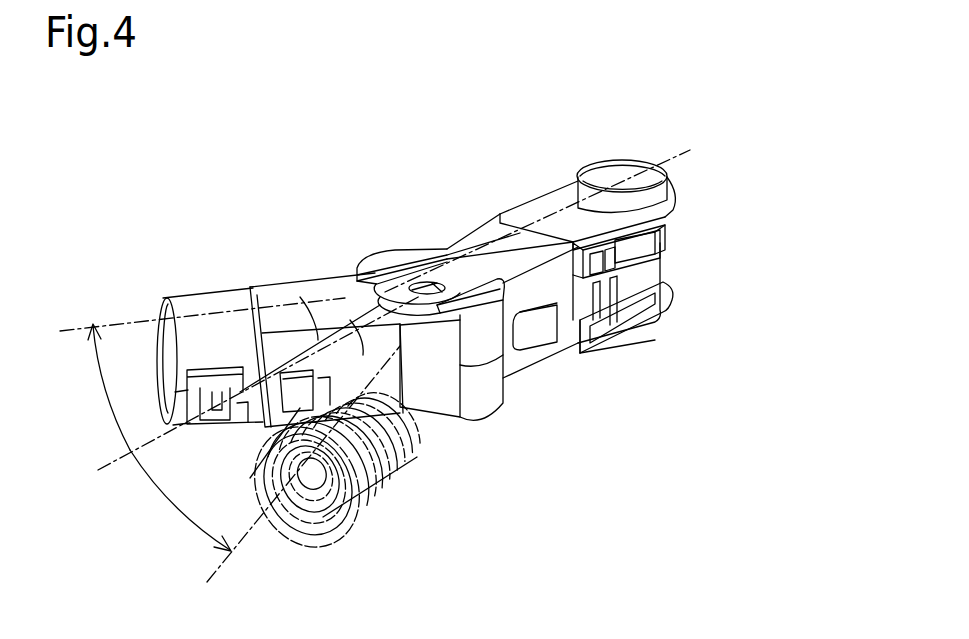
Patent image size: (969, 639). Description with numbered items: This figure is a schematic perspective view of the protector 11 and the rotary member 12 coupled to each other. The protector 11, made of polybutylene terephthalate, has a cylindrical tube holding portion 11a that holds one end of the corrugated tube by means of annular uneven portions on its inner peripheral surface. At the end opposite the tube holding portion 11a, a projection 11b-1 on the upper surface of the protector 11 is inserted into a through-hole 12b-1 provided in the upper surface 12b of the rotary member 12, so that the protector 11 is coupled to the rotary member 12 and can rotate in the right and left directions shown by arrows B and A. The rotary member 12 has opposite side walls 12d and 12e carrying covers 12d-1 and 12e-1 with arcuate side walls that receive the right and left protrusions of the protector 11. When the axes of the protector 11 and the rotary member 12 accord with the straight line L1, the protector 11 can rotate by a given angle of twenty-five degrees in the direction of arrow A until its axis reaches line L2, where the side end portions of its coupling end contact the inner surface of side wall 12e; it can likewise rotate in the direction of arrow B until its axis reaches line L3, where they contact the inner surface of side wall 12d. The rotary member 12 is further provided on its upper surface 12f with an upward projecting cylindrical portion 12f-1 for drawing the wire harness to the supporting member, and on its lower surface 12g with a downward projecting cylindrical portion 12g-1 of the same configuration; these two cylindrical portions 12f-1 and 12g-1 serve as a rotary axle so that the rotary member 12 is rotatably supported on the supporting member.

The protector 11 is at (244, 280).
The tube holding portion 11a is at (193, 300).
The projection 11b-1 is at (418, 287).
The rotary member 12 is at (474, 218).
The upper surface 12b is at (359, 272).
The through-hole 12b-1 is at (498, 212).
The side wall 12d is at (455, 256).
The cover 12d-1 is at (370, 266).
The side wall 12e is at (533, 300).
The cover 12e-1 is at (497, 300).
The upper surface 12f is at (566, 195).
The upward projecting cylindrical portion 12f-1 is at (627, 159).
The lower surface 12g is at (605, 347).
The downward projecting cylindrical portion 12g-1 is at (645, 340).
The straight line L1 is at (246, 389).
The line L2 is at (190, 319).
The line L3 is at (291, 479).
The arrow A is at (107, 387).
The arrow B is at (180, 500).